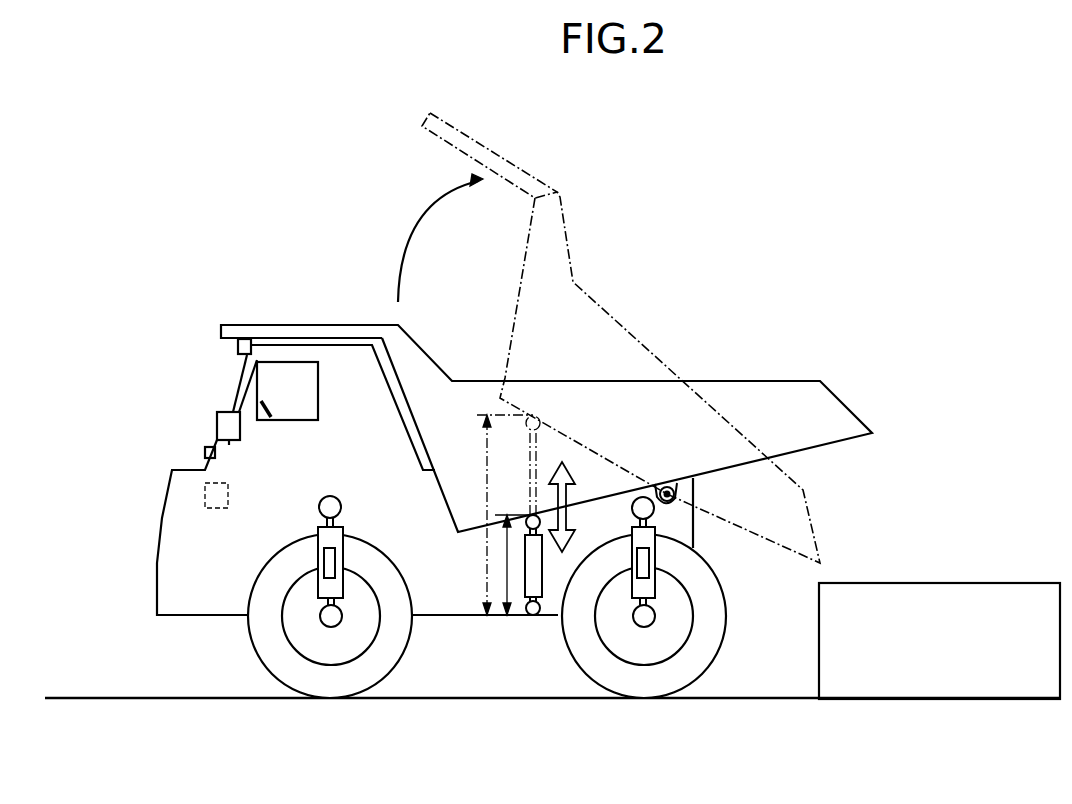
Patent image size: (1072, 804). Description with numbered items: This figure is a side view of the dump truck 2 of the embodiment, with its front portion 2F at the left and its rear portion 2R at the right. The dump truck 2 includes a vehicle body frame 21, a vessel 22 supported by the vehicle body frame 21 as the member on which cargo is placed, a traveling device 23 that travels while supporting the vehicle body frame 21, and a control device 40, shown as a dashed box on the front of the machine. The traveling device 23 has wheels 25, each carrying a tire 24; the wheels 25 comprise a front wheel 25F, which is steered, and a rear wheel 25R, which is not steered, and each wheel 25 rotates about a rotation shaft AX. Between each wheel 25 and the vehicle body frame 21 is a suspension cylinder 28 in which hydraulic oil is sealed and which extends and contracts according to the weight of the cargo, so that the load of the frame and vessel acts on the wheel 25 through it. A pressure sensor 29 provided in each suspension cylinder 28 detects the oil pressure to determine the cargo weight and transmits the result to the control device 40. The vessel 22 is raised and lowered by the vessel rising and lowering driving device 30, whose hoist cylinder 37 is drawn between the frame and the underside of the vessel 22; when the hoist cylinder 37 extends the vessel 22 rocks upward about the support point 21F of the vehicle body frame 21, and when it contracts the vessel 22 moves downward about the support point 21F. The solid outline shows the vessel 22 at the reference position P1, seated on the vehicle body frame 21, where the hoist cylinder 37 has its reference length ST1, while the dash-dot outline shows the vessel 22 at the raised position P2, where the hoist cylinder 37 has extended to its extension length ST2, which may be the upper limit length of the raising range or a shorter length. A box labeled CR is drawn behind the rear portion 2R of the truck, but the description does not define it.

The dump truck 2 is at (309, 269).
The front portion 2F is at (156, 439).
The rear portion 2R is at (864, 373).
The vehicle body frame 21 is at (433, 625).
The support point 21F is at (680, 497).
The vessel 22 is at (800, 380).
The traveling device 23 is at (740, 578).
The tire 24 is at (248, 637).
The wheel 25 is at (487, 664).
The front wheel 25F is at (344, 650).
The rear wheel 25R is at (650, 650).
The suspension cylinder 28 is at (327, 588).
The pressure sensor 29 is at (325, 563).
The vessel rising and lowering driving device 30 is at (498, 576).
The hoist cylinder 37 is at (538, 588).
The control device 40 is at (203, 492).
The rotation shaft AX is at (650, 617).
The crusher CR is at (1010, 582).
The reference position P1 is at (746, 370).
The raised position P2 is at (560, 181).
The reference length ST1 is at (505, 585).
The extension length ST2 is at (485, 490).